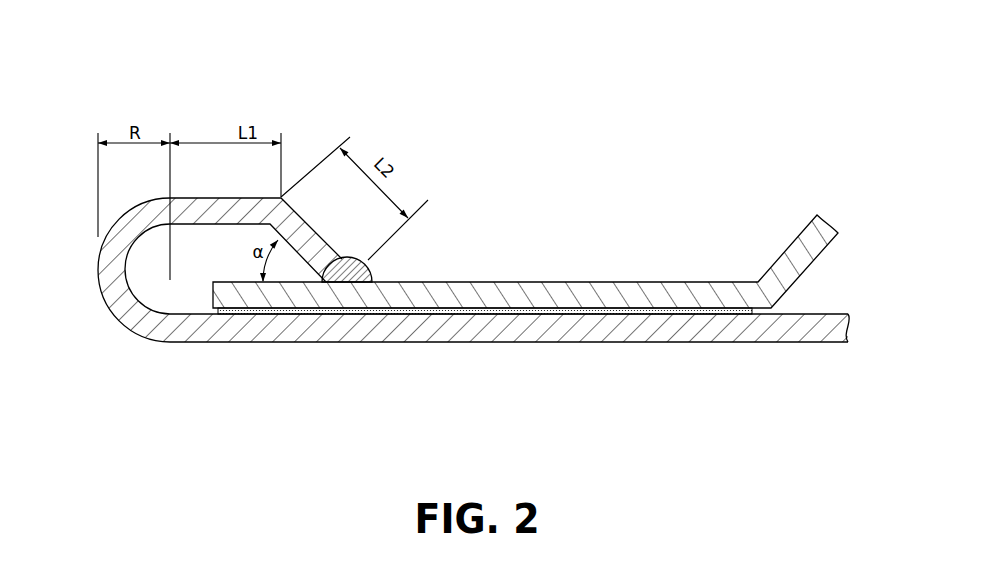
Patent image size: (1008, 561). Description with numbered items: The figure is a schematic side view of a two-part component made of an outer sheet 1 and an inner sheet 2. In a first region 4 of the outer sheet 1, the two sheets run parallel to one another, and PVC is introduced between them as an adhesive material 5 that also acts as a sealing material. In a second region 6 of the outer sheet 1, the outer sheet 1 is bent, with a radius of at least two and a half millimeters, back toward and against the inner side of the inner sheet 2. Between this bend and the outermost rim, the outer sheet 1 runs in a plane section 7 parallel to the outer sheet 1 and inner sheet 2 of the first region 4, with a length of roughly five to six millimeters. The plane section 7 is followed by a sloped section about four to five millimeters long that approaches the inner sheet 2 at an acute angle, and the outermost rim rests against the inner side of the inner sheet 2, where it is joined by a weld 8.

The outer sheet 1 is at (638, 344).
The inner sheet 2 is at (525, 272).
The first region 4 is at (453, 397).
The adhesive material 5 is at (712, 300).
The second region 6 is at (193, 392).
The plane section 7 is at (218, 188).
The weld 8 is at (352, 312).